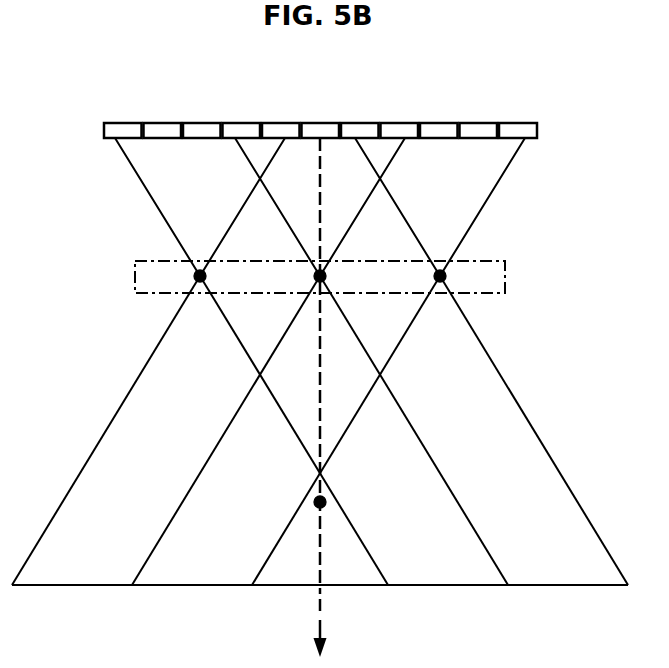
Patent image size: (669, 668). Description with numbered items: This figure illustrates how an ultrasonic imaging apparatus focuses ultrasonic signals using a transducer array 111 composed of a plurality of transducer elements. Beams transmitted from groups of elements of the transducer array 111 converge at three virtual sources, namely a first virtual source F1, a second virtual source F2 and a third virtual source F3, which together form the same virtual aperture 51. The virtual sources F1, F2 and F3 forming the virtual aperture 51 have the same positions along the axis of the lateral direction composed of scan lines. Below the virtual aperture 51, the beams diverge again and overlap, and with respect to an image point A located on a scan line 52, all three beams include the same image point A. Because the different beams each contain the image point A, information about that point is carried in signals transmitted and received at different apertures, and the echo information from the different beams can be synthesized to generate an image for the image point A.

The transducer array 111 is at (538, 116).
The virtual aperture 51 is at (505, 268).
The scan line 52 is at (321, 602).
The first virtual source F1 is at (206, 276).
The second virtual source F2 is at (326, 276).
The third virtual source F3 is at (446, 276).
The image point A is at (326, 504).